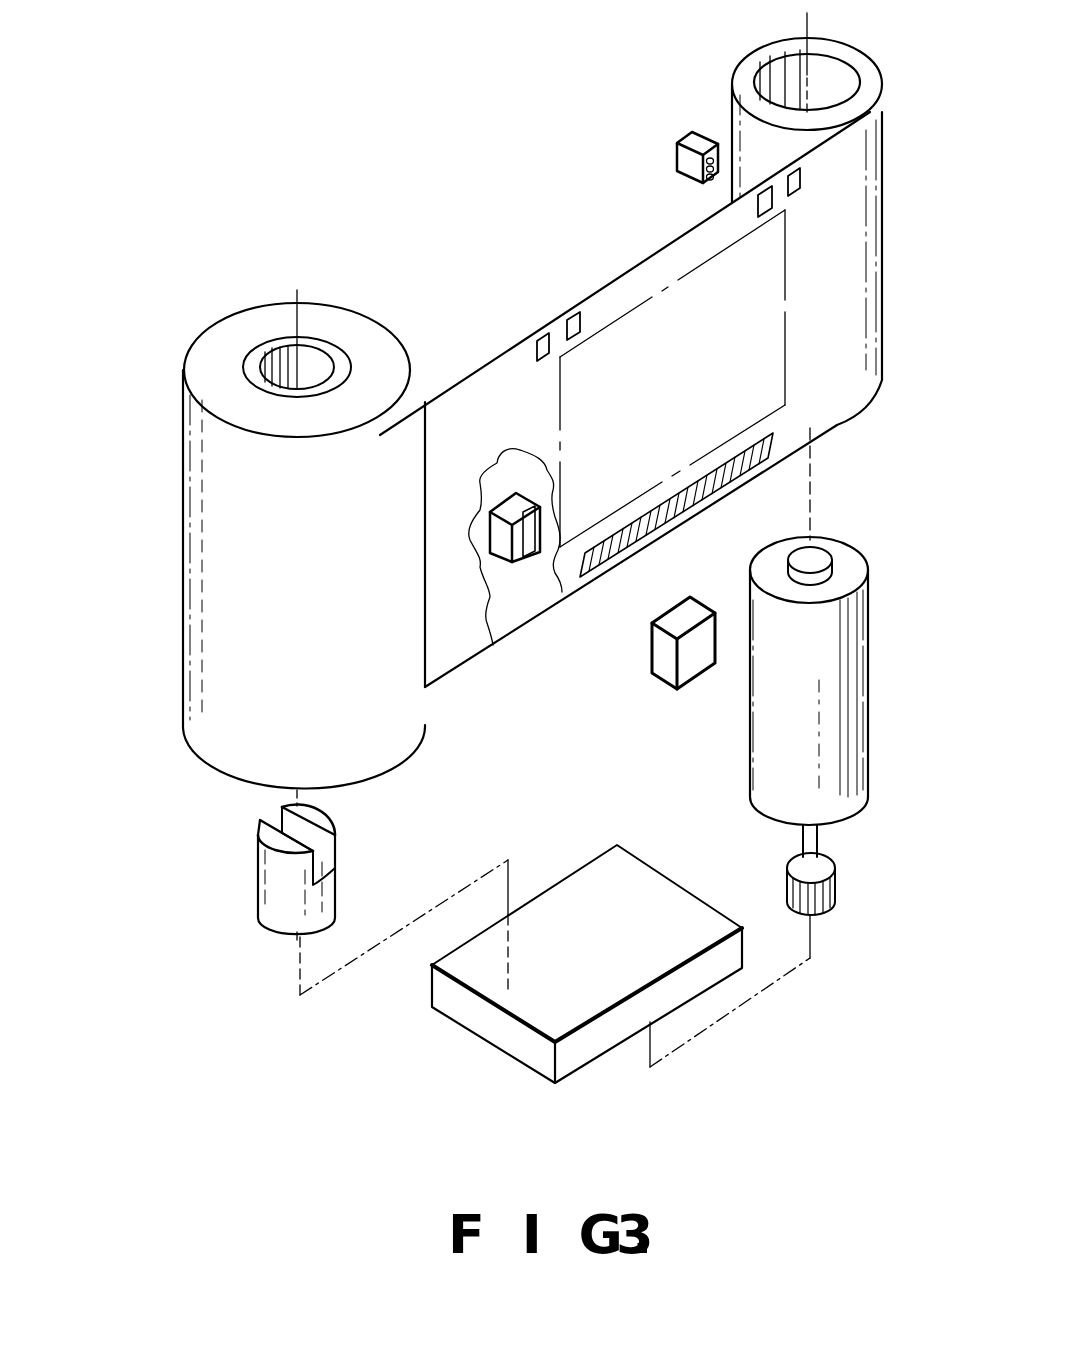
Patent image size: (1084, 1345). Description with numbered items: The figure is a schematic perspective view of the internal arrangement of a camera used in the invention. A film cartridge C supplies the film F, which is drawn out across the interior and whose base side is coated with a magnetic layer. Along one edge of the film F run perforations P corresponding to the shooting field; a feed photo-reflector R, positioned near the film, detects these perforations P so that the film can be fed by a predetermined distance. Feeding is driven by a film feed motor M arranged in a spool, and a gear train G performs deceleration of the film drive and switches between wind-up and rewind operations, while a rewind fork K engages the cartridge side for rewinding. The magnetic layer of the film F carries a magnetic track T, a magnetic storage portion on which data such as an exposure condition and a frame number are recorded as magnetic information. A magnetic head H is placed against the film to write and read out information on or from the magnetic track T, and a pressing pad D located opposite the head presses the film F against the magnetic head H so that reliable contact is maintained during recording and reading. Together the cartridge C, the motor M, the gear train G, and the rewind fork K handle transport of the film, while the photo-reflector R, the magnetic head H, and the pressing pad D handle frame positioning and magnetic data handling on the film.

The film cartridge C is at (200, 495).
The film F is at (812, 412).
The perforations P is at (570, 317).
The feed photo-reflector R is at (678, 152).
The pressing pad D is at (497, 530).
The magnetic track T is at (688, 518).
The magnetic head H is at (662, 660).
The film feed motor M is at (852, 688).
The rewind fork K is at (272, 880).
The gear train G is at (500, 1028).